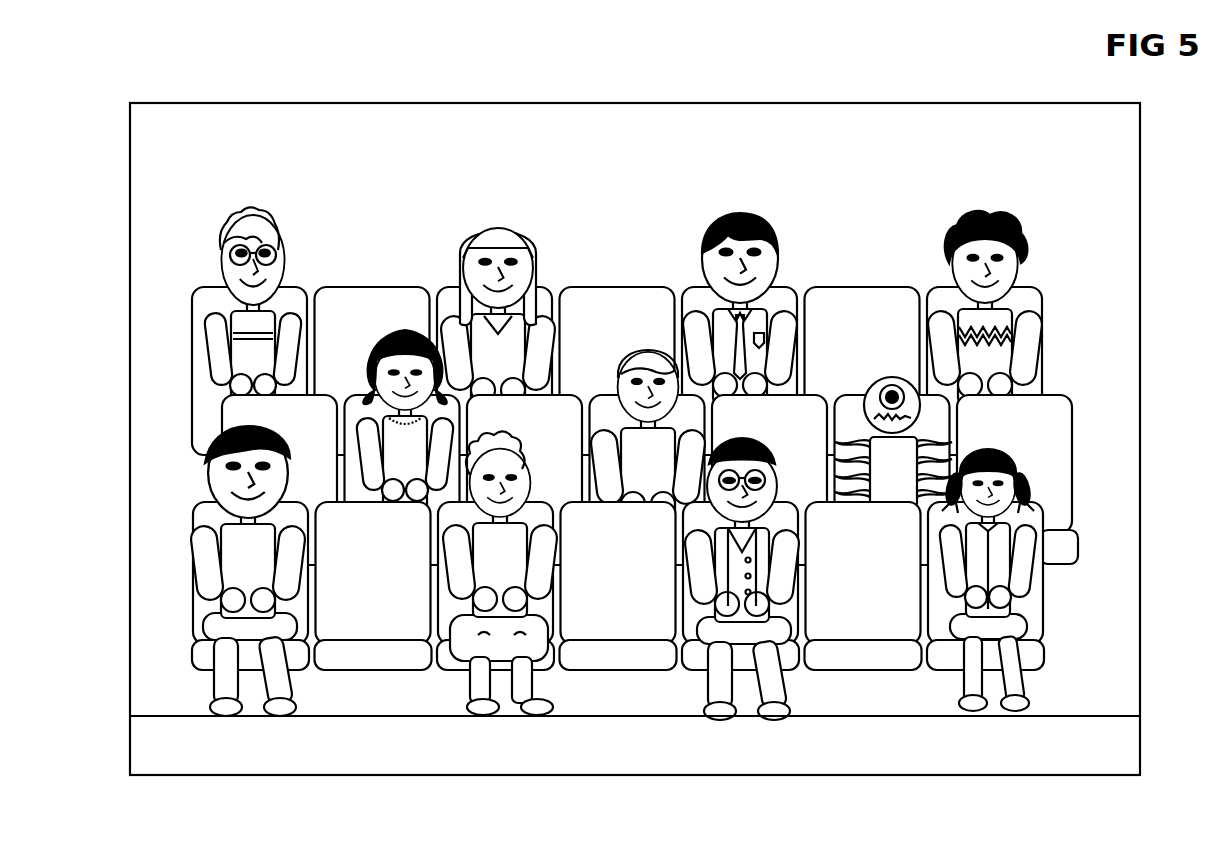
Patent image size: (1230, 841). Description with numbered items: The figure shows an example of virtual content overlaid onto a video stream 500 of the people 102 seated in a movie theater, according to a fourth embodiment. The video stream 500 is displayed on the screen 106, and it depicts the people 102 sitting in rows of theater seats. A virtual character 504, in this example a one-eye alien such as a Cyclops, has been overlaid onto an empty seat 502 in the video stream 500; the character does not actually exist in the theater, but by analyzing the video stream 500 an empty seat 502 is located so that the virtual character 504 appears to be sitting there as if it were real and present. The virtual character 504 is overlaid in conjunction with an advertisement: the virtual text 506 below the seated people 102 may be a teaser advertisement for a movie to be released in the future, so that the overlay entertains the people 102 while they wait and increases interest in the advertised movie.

The video stream 500 is at (1113, 143).
The screen 106 is at (130, 121).
The people 102 is at (1048, 212).
The empty seat 502 is at (852, 405).
The virtual character 504 is at (908, 467).
The virtual text 506 is at (130, 717).